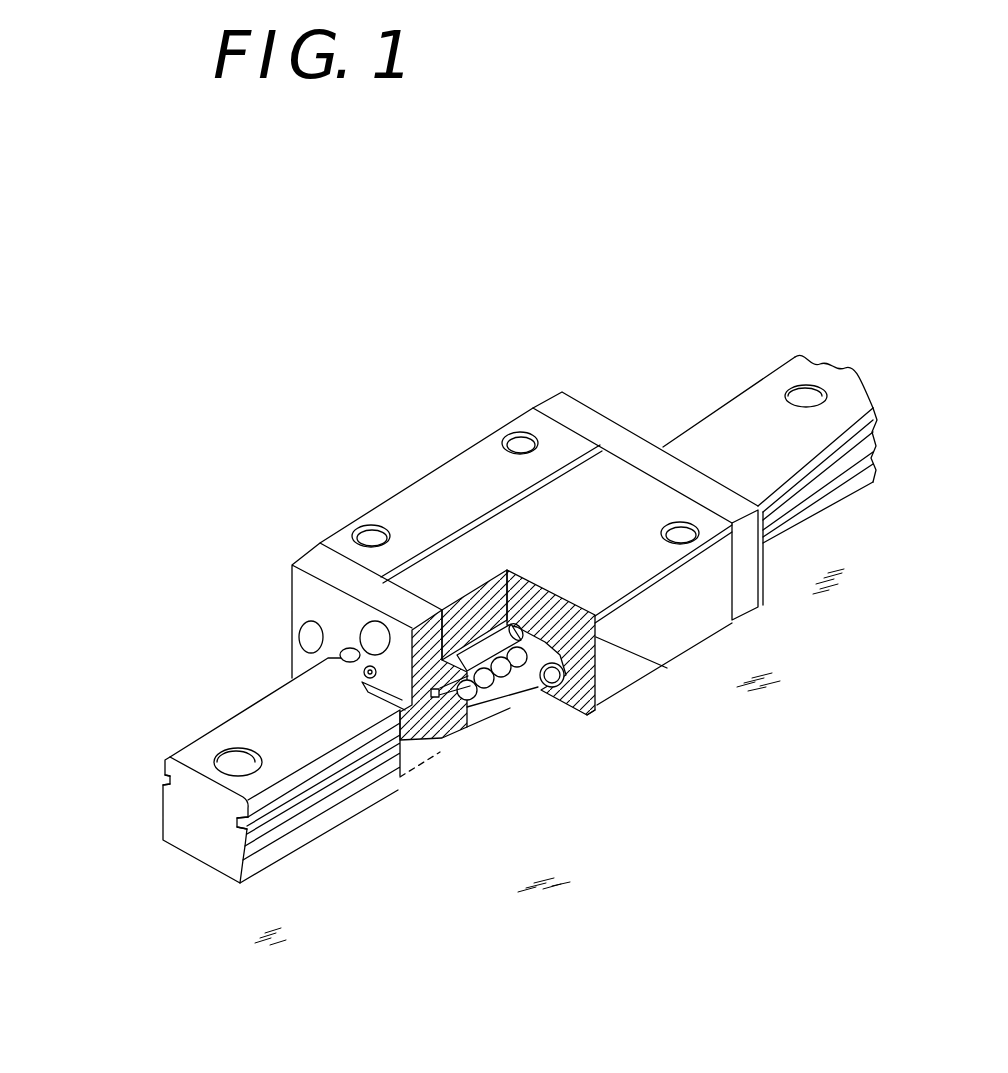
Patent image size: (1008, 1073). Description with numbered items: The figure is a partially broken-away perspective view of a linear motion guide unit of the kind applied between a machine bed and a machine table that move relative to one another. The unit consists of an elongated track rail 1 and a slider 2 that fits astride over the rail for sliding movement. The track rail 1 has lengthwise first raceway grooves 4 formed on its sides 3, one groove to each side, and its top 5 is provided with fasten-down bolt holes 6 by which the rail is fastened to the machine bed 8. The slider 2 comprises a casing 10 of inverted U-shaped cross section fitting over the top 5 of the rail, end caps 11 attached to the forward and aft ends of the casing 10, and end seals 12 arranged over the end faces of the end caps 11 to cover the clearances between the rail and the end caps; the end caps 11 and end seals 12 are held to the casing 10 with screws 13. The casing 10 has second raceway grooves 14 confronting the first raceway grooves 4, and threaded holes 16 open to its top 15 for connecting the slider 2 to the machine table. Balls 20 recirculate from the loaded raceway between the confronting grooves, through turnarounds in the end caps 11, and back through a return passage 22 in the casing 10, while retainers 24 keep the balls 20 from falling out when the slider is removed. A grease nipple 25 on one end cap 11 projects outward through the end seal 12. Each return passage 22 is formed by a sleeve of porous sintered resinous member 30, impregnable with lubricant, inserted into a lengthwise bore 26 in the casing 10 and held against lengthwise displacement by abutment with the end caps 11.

The track rail 1 is at (824, 520).
The slider 2 is at (474, 433).
The sides of track rail 3 is at (163, 813).
The first raceway groove 4 is at (165, 782).
The top of track rail 5 is at (278, 735).
The fasten down bolt hole 6 is at (233, 755).
The machine bed 8 is at (460, 926).
The casing 10 is at (562, 623).
The end cap 11 is at (327, 568).
The end seal 12 is at (312, 598).
The screw 13 is at (300, 628).
The second raceway groove 14 is at (580, 673).
The top of casing 15 is at (462, 485).
The threaded hole 16 is at (370, 533).
The ball 20 is at (493, 688).
The return passage 22 is at (547, 687).
The retainer 24 is at (450, 745).
The grease nipple 25 is at (345, 658).
The lengthwise bore 26 is at (580, 710).
The sintered resinous member 30 is at (541, 692).